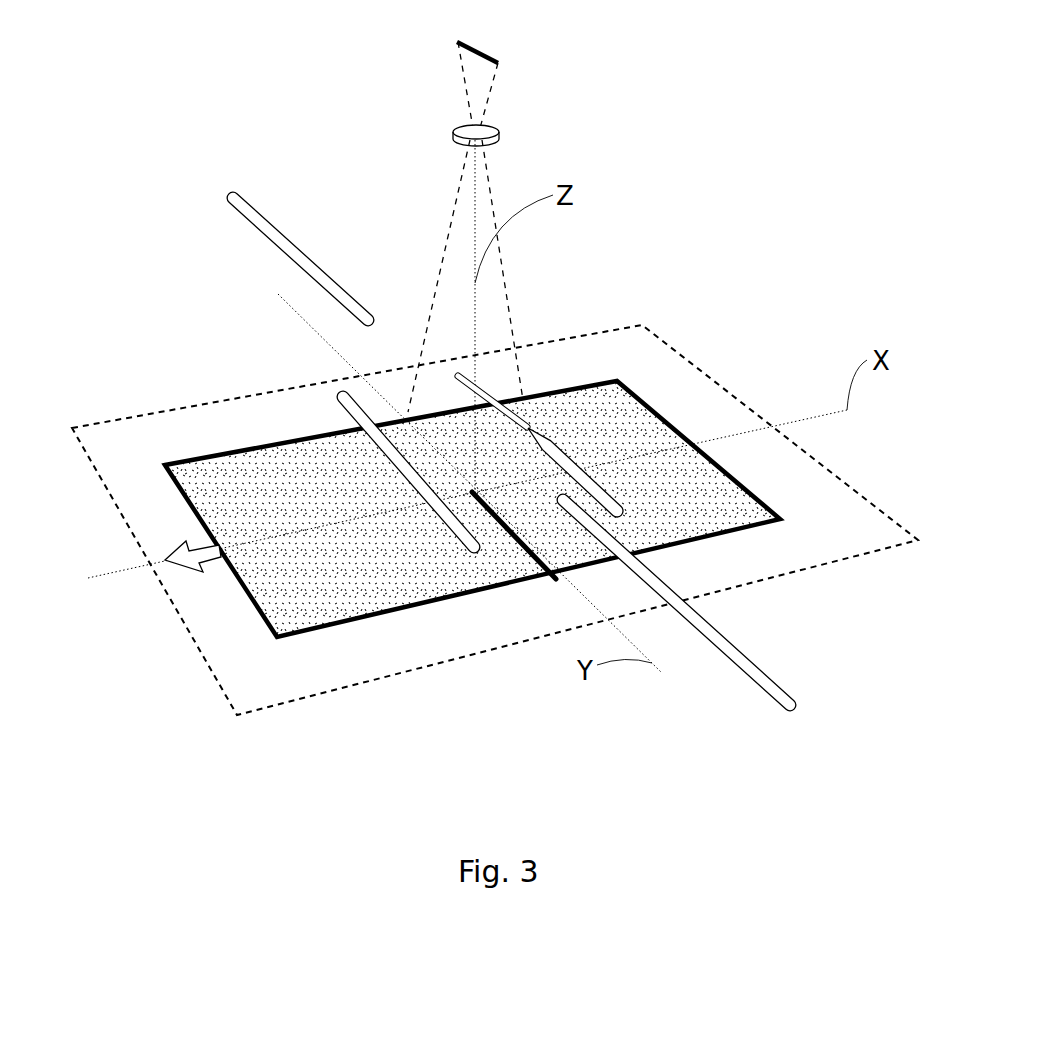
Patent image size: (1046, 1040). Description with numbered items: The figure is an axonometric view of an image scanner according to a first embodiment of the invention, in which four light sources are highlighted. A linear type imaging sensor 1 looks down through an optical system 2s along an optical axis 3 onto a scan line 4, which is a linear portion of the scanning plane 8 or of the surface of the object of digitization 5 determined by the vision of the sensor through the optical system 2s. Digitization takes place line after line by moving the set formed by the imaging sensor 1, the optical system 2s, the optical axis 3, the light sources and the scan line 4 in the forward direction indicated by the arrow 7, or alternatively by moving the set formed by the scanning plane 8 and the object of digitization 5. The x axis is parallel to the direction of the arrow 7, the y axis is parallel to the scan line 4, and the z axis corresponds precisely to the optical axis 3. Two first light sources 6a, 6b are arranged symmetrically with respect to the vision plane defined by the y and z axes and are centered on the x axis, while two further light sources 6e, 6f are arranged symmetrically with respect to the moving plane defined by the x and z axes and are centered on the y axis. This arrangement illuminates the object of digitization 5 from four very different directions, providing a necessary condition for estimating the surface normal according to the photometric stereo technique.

The linear type imaging sensor 1 is at (478, 47).
The optical system 2s is at (499, 134).
The optical axis 3 is at (475, 283).
The scan line 4 is at (470, 493).
The object of digitization 5 is at (617, 381).
The first light source 6a is at (464, 541).
The first light source 6b is at (627, 507).
The light source 6e is at (297, 257).
The light source 6f is at (706, 632).
The arrow indicating forward direction 7 is at (186, 546).
The scanning plane 8 is at (862, 492).